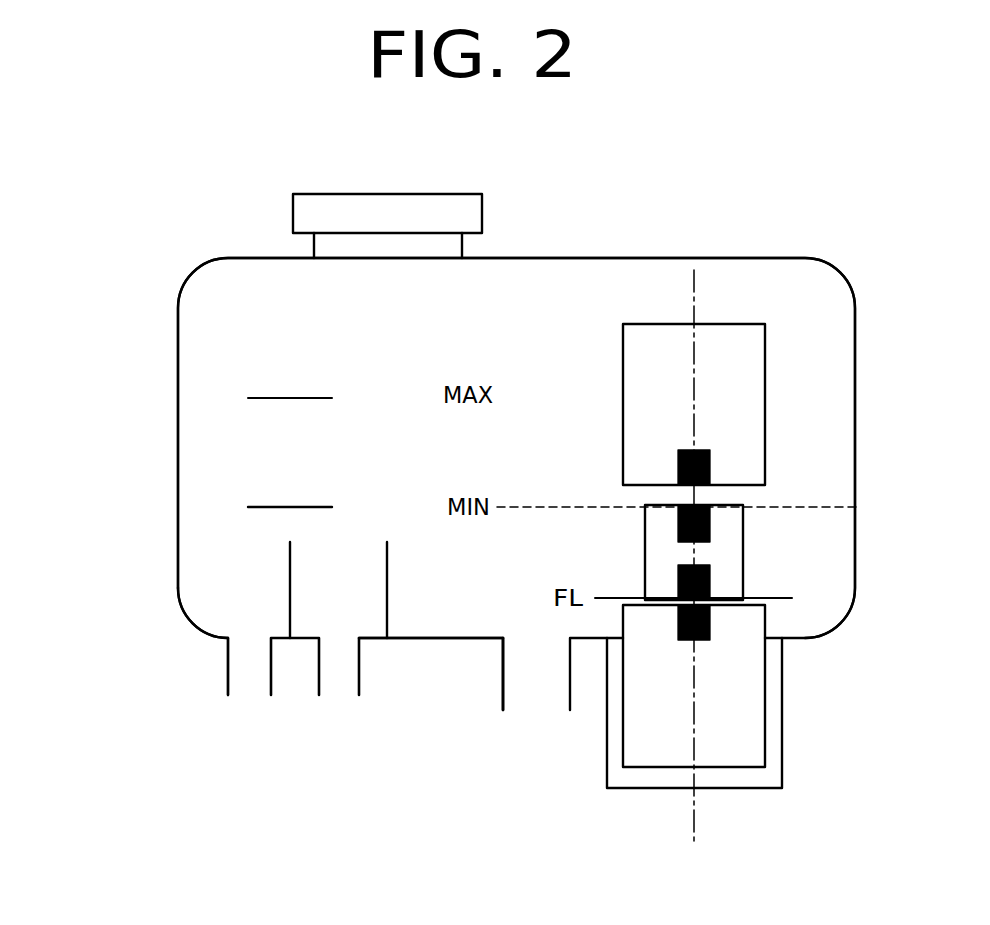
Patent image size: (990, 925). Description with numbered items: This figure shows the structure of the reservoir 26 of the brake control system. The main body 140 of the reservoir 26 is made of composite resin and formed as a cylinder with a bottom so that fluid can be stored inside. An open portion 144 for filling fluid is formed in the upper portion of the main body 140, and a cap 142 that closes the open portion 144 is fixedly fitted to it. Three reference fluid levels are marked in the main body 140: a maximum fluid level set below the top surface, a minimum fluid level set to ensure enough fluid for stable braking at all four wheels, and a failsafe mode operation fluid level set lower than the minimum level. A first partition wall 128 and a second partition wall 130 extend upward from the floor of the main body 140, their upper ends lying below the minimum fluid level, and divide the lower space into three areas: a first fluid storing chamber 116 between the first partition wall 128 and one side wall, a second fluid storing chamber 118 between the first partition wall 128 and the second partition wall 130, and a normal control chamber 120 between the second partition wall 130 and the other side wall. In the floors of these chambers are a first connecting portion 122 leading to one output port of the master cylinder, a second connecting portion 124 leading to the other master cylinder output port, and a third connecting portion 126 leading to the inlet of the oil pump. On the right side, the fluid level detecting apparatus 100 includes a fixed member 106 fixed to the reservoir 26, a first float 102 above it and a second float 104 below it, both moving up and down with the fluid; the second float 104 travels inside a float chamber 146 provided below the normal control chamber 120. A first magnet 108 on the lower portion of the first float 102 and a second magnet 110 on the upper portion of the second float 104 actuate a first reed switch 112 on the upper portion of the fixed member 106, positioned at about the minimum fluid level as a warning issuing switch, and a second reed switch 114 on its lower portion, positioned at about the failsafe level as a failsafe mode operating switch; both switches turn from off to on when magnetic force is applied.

The reservoir 26 is at (750, 200).
The fluid level detecting apparatus 100 is at (817, 483).
The first float 102 is at (765, 343).
The second float 104 is at (765, 685).
The fixed member 106 is at (743, 552).
The first magnet 108 is at (710, 468).
The second magnet 110 is at (710, 623).
The first reed switch 112 is at (710, 523).
The second reed switch 114 is at (710, 582).
The first fluid storing chamber 116 is at (187, 565).
The second fluid storing chamber 118 is at (308, 620).
The normal control chamber 120 is at (453, 607).
The first connecting portion 122 is at (228, 665).
The second connecting portion 124 is at (359, 667).
The third connecting portion 126 is at (503, 677).
The first partition wall 128 is at (290, 587).
The second partition wall 130 is at (387, 588).
The main body 140 is at (178, 320).
The cap 142 is at (387, 194).
The open portion 144 is at (312, 245).
The float chamber 146 is at (782, 723).